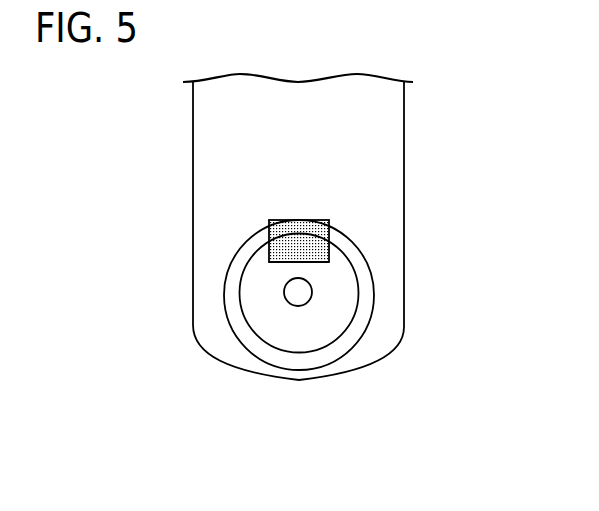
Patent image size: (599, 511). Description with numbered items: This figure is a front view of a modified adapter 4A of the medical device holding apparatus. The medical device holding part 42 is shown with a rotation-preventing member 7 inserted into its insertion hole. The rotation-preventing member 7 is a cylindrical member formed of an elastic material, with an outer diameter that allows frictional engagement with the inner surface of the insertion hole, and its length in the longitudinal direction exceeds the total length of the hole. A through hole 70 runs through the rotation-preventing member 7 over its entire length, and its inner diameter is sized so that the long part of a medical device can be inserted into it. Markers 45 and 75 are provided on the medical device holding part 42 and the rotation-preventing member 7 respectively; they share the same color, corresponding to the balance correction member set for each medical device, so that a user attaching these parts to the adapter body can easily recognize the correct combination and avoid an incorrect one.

The adapter 4A is at (385, 160).
The medical device holding part 42 is at (365, 308).
The rotation-preventing member 7 is at (275, 325).
The through hole 70 is at (298, 300).
The marker 45 is at (296, 222).
The marker 75 is at (282, 250).